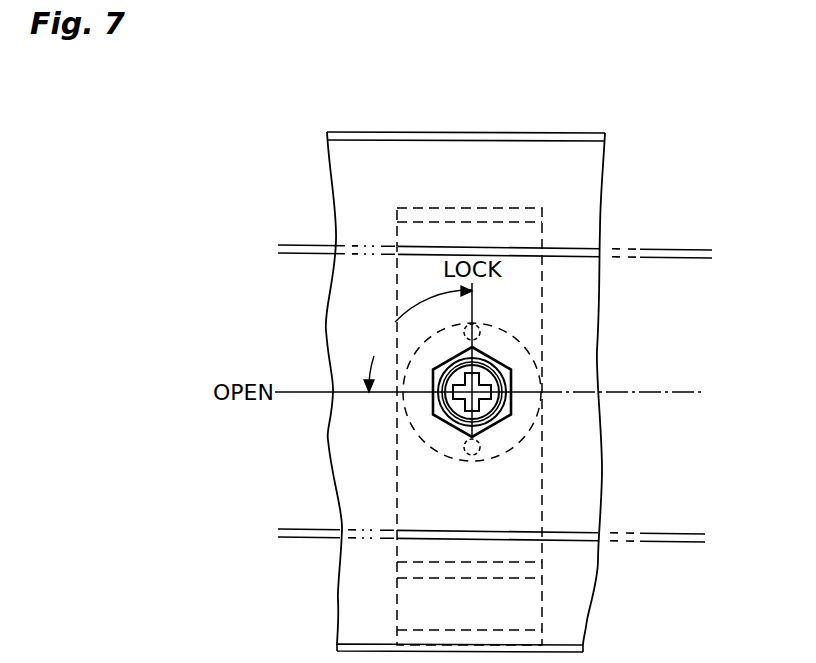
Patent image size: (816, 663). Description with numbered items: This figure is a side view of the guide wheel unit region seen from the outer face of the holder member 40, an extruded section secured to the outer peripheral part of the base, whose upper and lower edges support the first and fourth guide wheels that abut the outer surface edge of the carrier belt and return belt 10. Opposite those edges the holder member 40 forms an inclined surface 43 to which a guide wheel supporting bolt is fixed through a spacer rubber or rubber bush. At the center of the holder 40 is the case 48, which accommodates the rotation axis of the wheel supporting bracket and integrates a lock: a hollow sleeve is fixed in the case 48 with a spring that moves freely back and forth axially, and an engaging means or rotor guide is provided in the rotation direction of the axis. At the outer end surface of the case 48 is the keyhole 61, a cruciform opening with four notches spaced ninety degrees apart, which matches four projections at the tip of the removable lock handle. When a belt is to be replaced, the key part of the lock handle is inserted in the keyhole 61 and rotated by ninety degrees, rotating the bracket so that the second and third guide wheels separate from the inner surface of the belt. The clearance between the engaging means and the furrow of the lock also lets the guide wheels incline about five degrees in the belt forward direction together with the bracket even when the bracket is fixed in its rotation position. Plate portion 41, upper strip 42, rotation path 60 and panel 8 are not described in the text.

The panel 8 is at (380, 157).
The return belt 10 is at (290, 243).
The holder member 40 is at (419, 399).
The base plate 41 is at (427, 485).
The upper hook portion 42 is at (495, 213).
The inclined surface 43 is at (482, 573).
The case 48 is at (515, 349).
The rotation path of lock member 60 is at (517, 428).
The keyhole 61 is at (485, 370).